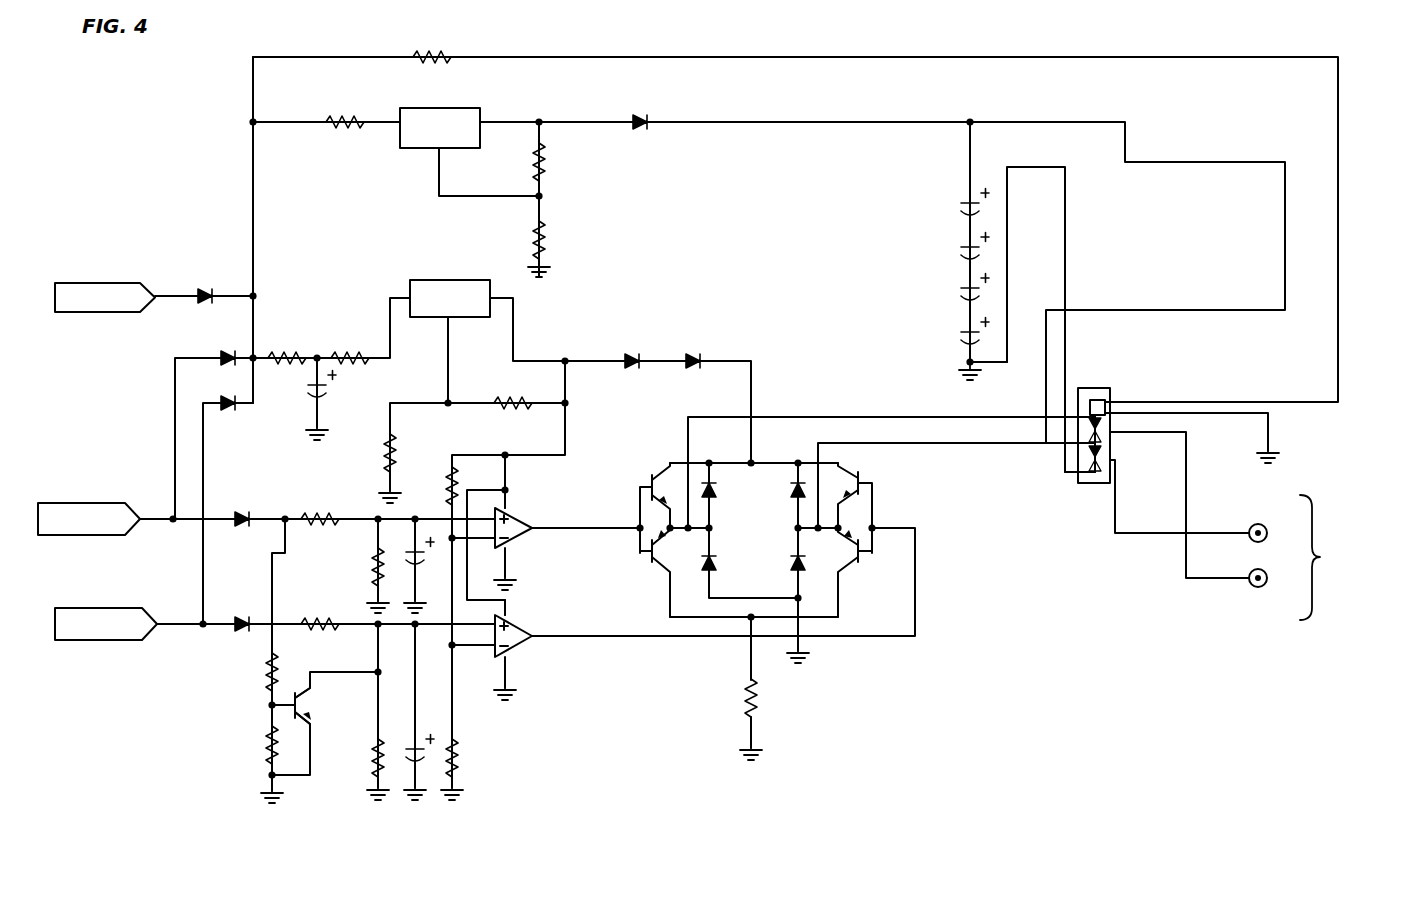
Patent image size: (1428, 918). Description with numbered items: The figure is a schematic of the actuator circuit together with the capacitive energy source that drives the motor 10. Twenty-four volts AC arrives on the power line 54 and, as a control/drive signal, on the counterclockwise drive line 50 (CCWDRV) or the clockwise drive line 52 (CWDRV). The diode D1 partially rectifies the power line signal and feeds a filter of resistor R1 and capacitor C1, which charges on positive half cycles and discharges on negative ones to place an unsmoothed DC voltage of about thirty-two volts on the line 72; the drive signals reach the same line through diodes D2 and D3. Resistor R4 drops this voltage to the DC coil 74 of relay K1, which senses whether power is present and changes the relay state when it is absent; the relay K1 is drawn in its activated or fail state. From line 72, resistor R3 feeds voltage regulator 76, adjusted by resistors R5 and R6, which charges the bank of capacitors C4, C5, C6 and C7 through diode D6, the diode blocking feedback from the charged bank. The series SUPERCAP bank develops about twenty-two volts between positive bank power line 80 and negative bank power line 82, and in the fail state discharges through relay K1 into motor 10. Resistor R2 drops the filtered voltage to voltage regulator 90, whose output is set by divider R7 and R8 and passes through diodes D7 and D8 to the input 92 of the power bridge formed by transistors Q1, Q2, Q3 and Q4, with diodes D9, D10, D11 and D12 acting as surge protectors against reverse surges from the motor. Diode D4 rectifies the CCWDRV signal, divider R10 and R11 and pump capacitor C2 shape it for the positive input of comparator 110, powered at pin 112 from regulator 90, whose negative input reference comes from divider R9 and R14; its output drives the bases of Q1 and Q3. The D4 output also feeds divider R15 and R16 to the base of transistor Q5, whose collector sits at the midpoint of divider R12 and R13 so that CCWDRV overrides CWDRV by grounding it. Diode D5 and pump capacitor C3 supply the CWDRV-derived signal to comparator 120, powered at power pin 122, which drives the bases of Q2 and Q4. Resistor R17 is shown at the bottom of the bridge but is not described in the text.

The motor 10 is at (1315, 557).
The counterclockwise drive line 50 is at (160, 517).
The clockwise drive line 52 is at (175, 620).
The power line 54 is at (175, 294).
The line 72 is at (251, 186).
The DC coil 74 is at (1107, 388).
The voltage regulator 76 is at (462, 150).
The positive bank power line 80 is at (956, 115).
The negative bank power line 82 is at (990, 366).
The voltage regulator 90 is at (463, 325).
The input 92 is at (758, 454).
The comparator 110 is at (514, 510).
The pin 112 is at (514, 492).
The comparator 120 is at (514, 620).
The power pin 122 is at (514, 602).
The relay K1 is at (1120, 421).
The transistor Q1 is at (664, 470).
The transistor Q2 is at (850, 470).
The transistor Q3 is at (670, 578).
The transistor Q4 is at (848, 578).
The transistor Q5 is at (312, 710).
The diode D1 is at (212, 289).
The diode D2 is at (232, 347).
The diode D3 is at (222, 394).
The diode D4 is at (246, 509).
The diode D5 is at (246, 614).
The diode D6 is at (647, 114).
The diode D7 is at (644, 349).
The diode D8 is at (704, 349).
The diode D9 is at (716, 491).
The diode D10 is at (790, 486).
The diode D11 is at (716, 558).
The diode D12 is at (790, 559).
The resistor R1 is at (302, 349).
The resistor R2 is at (364, 349).
The resistor R3 is at (347, 126).
The resistor R4 is at (432, 61).
The resistor R5 is at (546, 174).
The resistor R6 is at (546, 252).
The resistor R7 is at (516, 392).
The resistor R8 is at (396, 464).
The resistor R9 is at (444, 477).
The resistor R10 is at (334, 507).
The resistor R11 is at (370, 547).
The resistor R12 is at (334, 612).
The resistor R13 is at (367, 739).
The resistor R14 is at (458, 762).
The resistor R15 is at (262, 659).
The resistor R16 is at (262, 741).
The resistor R17 is at (758, 715).
The capacitor C1 is at (328, 392).
The capacitor C2 is at (426, 558).
The capacitor C3 is at (406, 750).
The capacitor C4 is at (960, 204).
The capacitor C5 is at (960, 248).
The capacitor C6 is at (960, 289).
The capacitor C7 is at (960, 333).